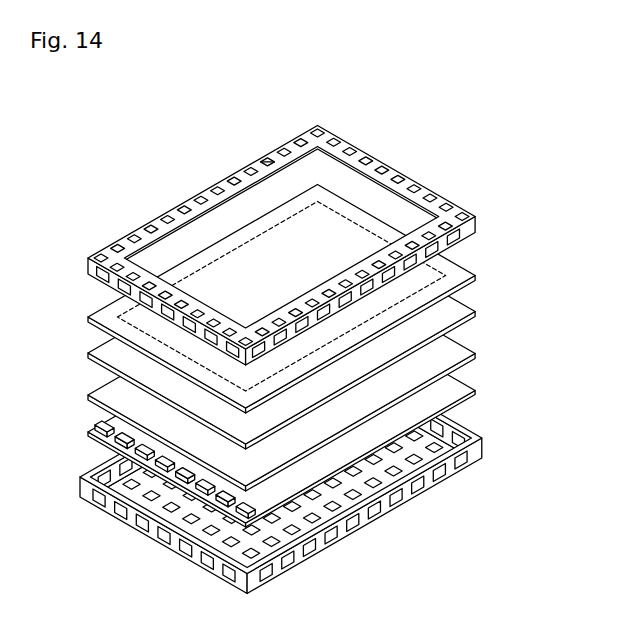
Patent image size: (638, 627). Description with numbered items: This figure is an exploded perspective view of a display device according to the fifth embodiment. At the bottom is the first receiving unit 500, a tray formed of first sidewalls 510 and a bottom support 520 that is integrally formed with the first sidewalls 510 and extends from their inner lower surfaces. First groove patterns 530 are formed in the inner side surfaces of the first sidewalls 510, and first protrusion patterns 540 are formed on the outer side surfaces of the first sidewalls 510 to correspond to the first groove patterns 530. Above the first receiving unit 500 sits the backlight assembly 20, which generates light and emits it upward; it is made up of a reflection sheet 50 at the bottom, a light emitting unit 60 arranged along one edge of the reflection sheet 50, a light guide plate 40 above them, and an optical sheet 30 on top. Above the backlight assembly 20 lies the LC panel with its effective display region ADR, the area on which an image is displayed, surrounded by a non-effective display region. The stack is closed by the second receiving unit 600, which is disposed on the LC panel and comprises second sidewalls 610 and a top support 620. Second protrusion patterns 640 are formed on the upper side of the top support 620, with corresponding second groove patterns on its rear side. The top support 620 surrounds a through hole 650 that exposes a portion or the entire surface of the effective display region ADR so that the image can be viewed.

The backlight assembly 20 is at (271, 374).
The optical sheet 30 is at (50, 437).
The light guide plate 40 is at (88, 397).
The reflection sheet 50 is at (88, 433).
The light emitting unit 60 is at (103, 427).
The first receiving unit 500 is at (313, 468).
The first sidewalls 510 is at (148, 533).
The bottom support 520 is at (192, 525).
The first groove patterns 530 is at (231, 541).
The first protrusion patterns 540 is at (470, 458).
The second receiving unit 600 is at (290, 246).
The second sidewalls 610 is at (115, 283).
The top support 620 is at (158, 278).
The second protrusion patterns 640 is at (369, 166).
The through hole 650 is at (324, 223).
The effective display region ADR is at (266, 159).